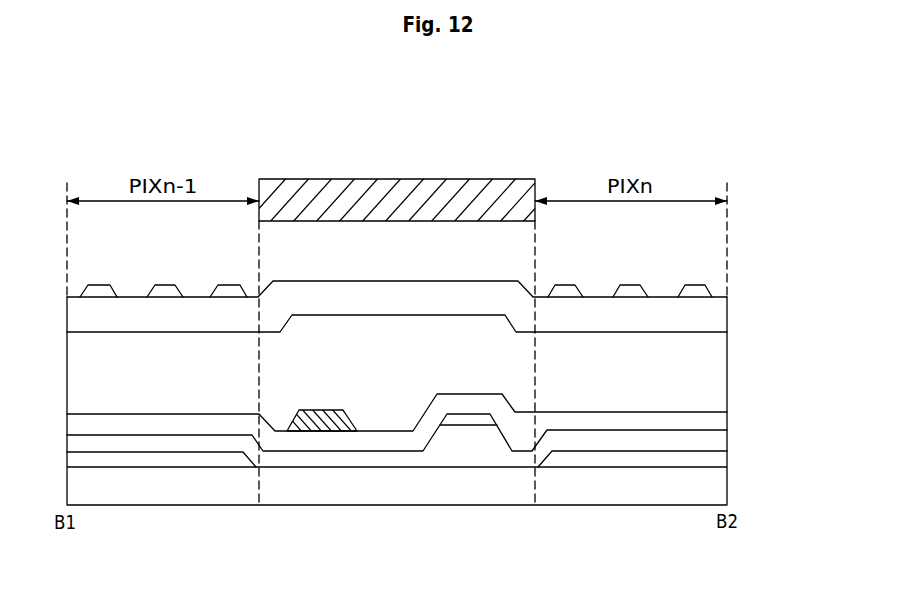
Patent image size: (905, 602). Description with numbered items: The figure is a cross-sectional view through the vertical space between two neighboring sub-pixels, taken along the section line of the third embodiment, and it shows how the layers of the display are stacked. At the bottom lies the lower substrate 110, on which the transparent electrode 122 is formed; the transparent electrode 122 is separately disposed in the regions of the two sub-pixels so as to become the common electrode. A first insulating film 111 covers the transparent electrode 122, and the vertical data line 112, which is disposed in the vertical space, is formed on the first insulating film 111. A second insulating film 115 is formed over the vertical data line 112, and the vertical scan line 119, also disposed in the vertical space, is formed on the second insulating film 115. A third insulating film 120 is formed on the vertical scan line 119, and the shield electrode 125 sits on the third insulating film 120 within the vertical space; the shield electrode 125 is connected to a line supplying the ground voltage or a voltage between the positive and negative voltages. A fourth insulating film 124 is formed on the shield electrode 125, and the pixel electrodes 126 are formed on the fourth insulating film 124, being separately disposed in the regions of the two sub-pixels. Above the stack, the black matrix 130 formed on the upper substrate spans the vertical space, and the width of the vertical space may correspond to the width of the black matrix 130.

The lower substrate 110 is at (718, 488).
The first insulating film 111 is at (718, 456).
The vertical data line 112 is at (470, 437).
The second insulating film 115 is at (718, 418).
The vertical scan line 119 is at (319, 425).
The third insulating film 120 is at (718, 366).
The transparent electrode 122 is at (718, 437).
The fourth insulating film 124 is at (718, 312).
The shield electrode 125 is at (383, 328).
The pixel electrodes 126 is at (700, 291).
The black matrix 130 is at (393, 190).